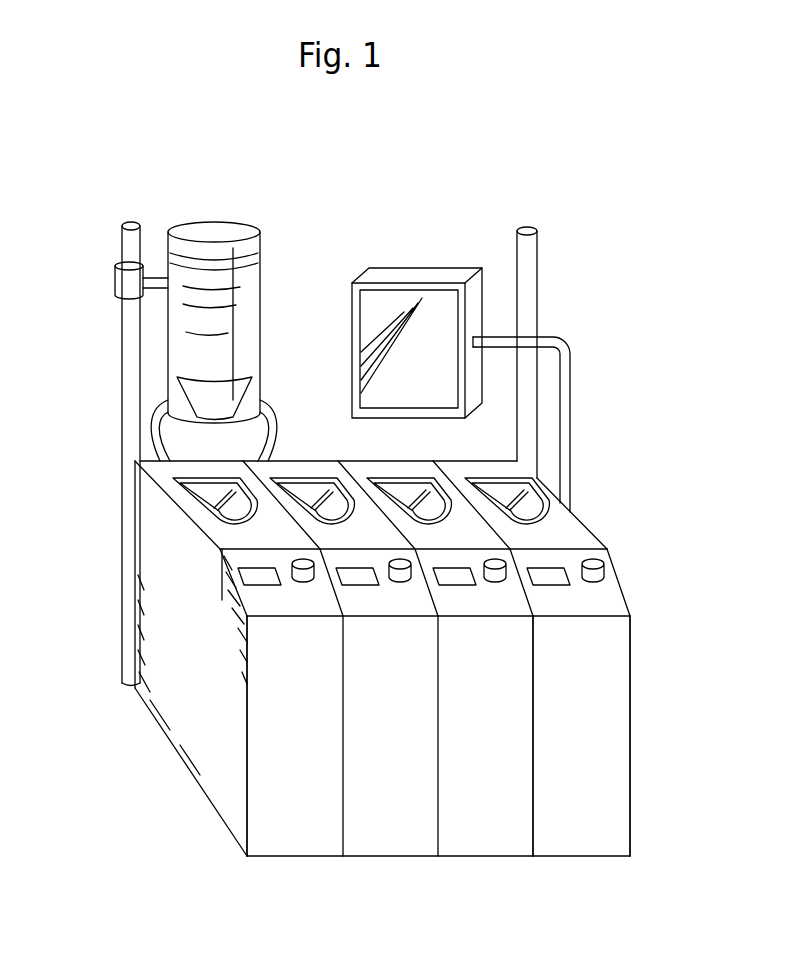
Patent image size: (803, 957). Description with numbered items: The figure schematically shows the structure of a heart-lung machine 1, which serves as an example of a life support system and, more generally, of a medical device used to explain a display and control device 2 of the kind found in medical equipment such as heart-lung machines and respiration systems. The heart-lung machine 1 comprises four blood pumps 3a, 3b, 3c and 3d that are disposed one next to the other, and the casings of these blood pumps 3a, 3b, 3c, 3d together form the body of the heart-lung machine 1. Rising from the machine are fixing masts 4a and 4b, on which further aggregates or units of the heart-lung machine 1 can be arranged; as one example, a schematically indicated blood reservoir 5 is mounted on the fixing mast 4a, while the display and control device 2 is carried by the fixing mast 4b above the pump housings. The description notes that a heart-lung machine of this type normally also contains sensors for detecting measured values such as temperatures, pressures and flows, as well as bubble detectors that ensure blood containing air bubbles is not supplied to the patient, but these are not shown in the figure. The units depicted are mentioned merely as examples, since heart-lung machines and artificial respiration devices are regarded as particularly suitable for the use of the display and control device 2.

The heart-lung machine 1 is at (421, 658).
The display and control device 2 is at (413, 278).
The blood pump 3a is at (290, 837).
The blood pump 3b is at (393, 837).
The blood pump 3c is at (487, 837).
The blood pump 3d is at (582, 837).
The fixing mast 4a is at (133, 385).
The fixing mast 4b is at (530, 296).
The blood reservoir 5 is at (260, 257).